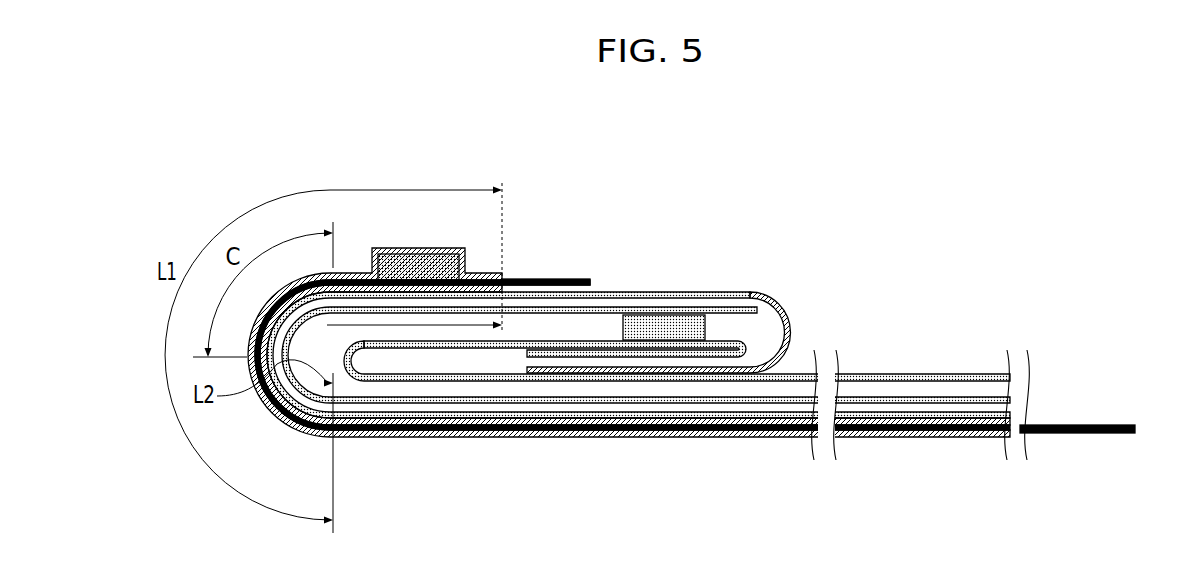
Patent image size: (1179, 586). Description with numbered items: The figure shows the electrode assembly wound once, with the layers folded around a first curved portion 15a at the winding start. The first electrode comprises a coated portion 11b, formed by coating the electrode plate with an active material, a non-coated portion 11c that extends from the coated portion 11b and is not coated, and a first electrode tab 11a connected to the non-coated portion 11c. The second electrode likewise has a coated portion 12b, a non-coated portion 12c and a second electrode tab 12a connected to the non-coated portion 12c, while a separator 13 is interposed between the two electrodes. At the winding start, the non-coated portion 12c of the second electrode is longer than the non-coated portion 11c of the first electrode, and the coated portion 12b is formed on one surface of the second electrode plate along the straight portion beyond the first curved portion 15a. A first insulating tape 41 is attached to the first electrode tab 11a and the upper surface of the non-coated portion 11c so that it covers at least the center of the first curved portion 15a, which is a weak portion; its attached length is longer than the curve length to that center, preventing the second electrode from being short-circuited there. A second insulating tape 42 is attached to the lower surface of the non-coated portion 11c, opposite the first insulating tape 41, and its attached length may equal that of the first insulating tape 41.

The first electrode tab 11a is at (418, 265).
The coated portion 11b is at (610, 426).
The non-coated portion 11c is at (550, 279).
The second electrode tab 12a is at (667, 320).
The coated portion 12b is at (482, 421).
The non-coated portion 12c is at (306, 387).
The separator 13 is at (620, 292).
The first insulating tape 41 is at (357, 273).
The second insulating tape 42 is at (300, 283).
The first curved portion 15a is at (246, 326).